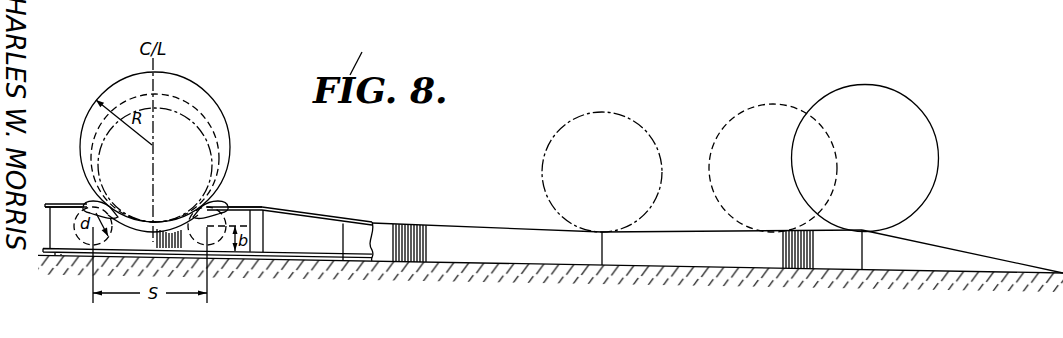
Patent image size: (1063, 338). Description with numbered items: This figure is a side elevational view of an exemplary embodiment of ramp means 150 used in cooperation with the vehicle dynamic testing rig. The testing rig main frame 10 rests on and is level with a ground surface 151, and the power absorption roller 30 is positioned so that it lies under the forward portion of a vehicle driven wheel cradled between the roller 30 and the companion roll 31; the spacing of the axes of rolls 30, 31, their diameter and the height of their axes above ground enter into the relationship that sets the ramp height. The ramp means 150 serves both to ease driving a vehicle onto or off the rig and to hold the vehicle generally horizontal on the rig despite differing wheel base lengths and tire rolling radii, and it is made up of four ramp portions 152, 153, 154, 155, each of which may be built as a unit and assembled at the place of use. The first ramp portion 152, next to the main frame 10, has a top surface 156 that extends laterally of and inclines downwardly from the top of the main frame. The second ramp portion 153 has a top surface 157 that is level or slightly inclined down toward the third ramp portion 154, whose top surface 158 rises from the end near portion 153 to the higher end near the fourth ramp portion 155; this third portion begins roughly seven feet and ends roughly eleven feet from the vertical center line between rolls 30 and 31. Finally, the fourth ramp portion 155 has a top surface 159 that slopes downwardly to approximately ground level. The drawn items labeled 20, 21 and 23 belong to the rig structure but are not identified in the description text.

The testing rig main frame 10 is at (273, 192).
The anchor block 20 is at (263, 230).
The support bracket 21 is at (47, 206).
The base plate 23 is at (78, 250).
The power absorption roller 30 is at (211, 203).
The roll 31 is at (91, 200).
The ramp means 150 is at (662, 230).
The ground surface 151 is at (304, 260).
The first ramp portion 152 is at (322, 241).
The second ramp portion 153 is at (487, 234).
The third ramp portion 154 is at (732, 238).
The fourth ramp portion 155 is at (962, 243).
The top surface 156 is at (332, 218).
The top surface 157 is at (470, 225).
The top surface 158 is at (666, 231).
The top surface 159 is at (900, 236).